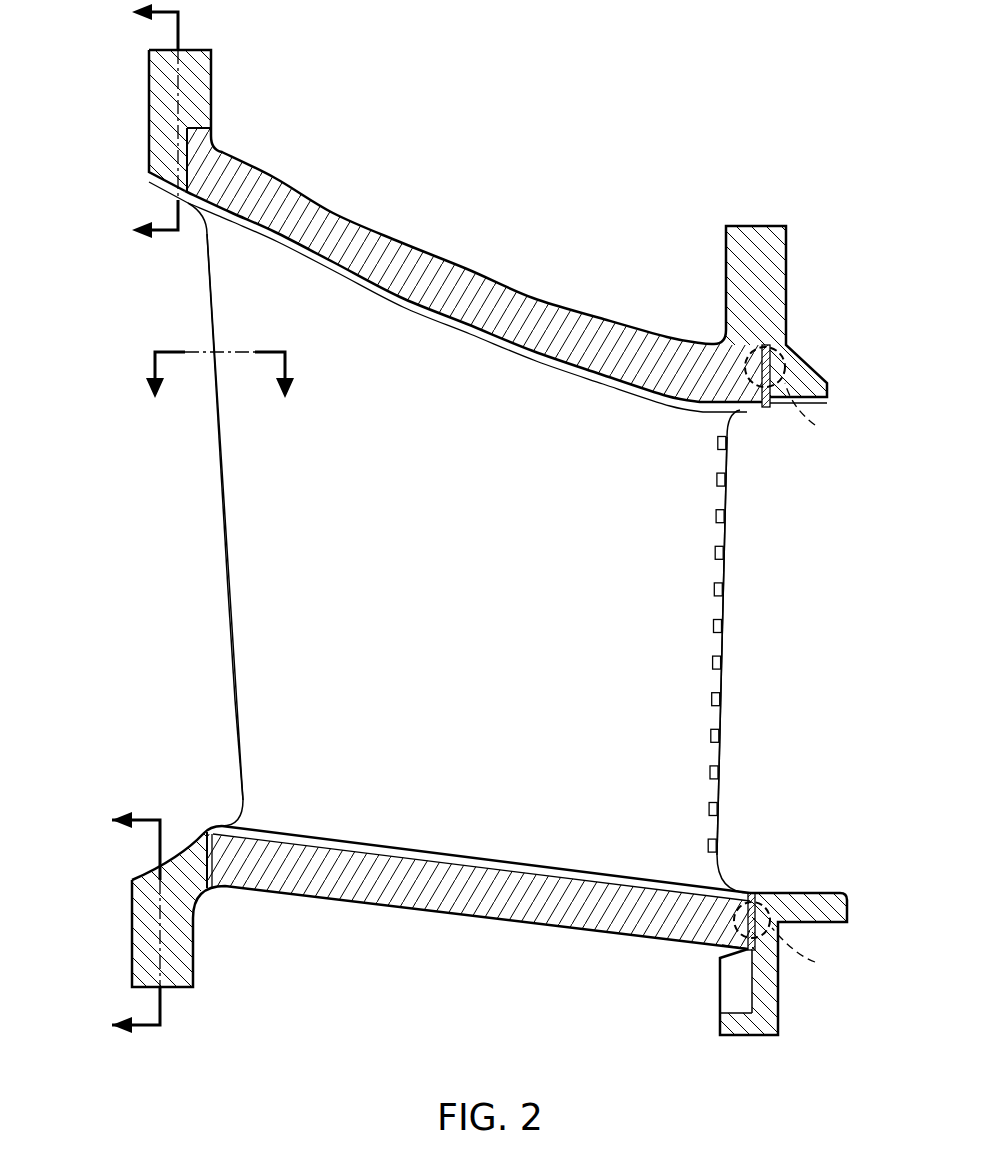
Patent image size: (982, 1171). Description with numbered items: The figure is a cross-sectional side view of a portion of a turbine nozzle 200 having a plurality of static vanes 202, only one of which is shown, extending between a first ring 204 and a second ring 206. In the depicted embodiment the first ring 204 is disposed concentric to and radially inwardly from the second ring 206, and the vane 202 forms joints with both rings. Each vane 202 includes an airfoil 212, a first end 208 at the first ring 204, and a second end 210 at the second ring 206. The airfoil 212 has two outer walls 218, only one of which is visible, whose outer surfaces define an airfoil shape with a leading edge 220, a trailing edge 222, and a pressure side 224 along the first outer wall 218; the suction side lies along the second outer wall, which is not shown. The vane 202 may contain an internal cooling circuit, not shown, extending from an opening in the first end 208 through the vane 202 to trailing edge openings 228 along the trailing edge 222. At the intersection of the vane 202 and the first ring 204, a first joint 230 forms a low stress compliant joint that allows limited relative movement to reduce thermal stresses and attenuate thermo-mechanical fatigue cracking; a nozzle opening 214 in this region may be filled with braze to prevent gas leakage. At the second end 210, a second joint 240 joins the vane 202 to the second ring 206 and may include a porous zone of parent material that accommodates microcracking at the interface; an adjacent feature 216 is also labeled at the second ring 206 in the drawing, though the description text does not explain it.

The turbine nozzle 200 is at (548, 131).
The static vane 202 is at (258, 527).
The first ring 204 is at (140, 940).
The second ring 206 is at (160, 88).
The first end 208 is at (460, 912).
The second end 210 is at (363, 226).
The airfoil 212 is at (272, 660).
The nozzle opening 214 is at (754, 893).
The outer band aft rail 216 is at (764, 409).
The outer wall 218 is at (668, 742).
The leading edge 220 is at (226, 588).
The trailing edge 222 is at (723, 612).
The pressure side 224 is at (277, 748).
The trailing edge openings 228 is at (725, 552).
The first joint 230 is at (735, 928).
The second joint 240 is at (778, 358).